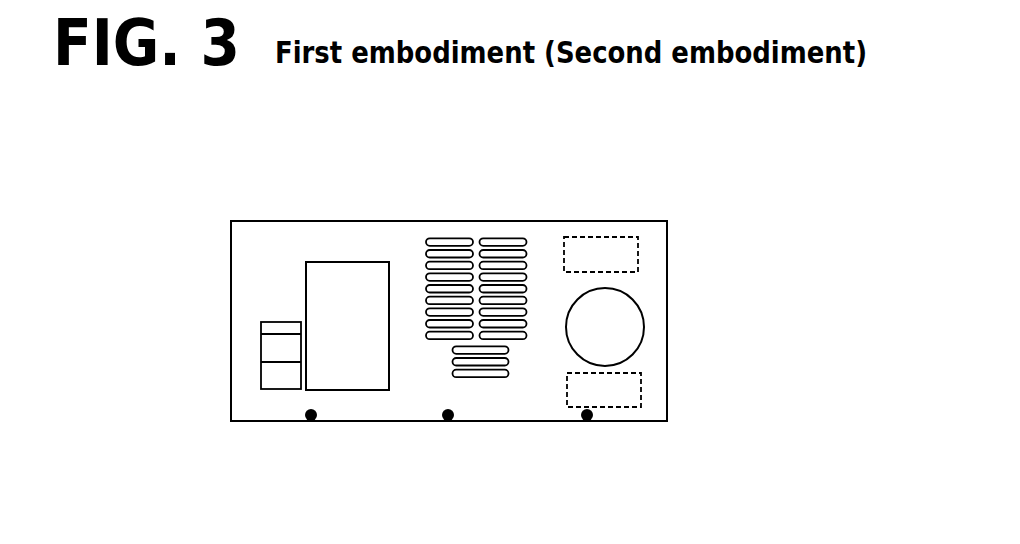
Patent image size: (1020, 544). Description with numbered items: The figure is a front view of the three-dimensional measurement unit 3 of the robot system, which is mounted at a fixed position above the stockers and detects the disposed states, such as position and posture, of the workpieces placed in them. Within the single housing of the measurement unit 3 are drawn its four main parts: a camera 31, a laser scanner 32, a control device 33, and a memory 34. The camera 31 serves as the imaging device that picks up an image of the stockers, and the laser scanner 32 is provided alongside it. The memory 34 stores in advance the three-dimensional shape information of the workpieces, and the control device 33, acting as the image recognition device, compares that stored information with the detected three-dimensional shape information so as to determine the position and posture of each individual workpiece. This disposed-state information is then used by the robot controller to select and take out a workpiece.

The three-dimensional measurement unit 3 is at (589, 211).
The camera 31 is at (623, 310).
The laser scanner 32 is at (343, 278).
The control device 33 is at (640, 253).
The memory 34 is at (645, 392).